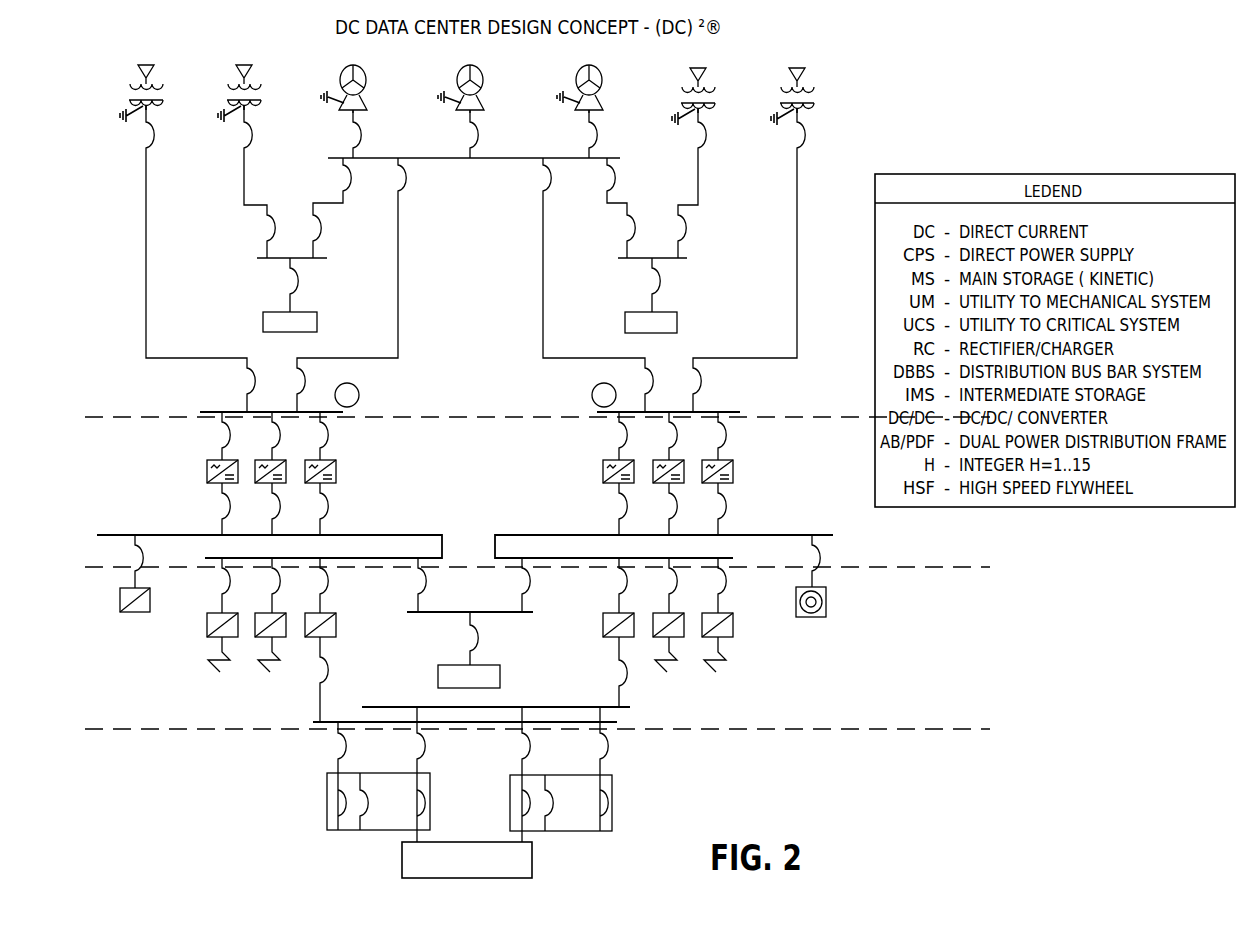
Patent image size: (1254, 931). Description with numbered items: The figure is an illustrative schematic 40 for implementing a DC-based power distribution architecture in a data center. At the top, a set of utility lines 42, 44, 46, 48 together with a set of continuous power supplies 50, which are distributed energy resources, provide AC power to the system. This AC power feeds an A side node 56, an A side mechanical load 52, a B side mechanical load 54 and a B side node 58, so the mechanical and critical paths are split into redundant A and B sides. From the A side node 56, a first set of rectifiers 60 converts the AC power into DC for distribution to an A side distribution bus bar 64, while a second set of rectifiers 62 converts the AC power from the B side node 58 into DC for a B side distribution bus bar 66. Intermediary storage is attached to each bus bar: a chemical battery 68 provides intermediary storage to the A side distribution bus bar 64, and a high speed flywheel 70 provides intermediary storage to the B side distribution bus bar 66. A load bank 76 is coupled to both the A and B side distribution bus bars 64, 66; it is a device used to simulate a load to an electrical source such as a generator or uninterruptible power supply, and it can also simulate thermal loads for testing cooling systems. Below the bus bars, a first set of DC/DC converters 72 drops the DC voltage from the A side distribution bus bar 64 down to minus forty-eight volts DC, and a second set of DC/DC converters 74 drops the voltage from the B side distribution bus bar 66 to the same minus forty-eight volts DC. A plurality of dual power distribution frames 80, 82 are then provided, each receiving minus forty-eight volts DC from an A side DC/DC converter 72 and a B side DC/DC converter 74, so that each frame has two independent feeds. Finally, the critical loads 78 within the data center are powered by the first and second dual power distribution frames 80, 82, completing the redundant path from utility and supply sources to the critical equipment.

The schematic 40 is at (96, 101).
The utility line 42 is at (163, 83).
The utility line 44 is at (816, 93).
The utility line 46 is at (261, 84).
The utility line 48 is at (716, 93).
The continuous power supplies 50 is at (618, 87).
The A side mechanical load 52 is at (330, 322).
The B side mechanical load 54 is at (692, 322).
The A side node 56 is at (207, 408).
The B side node 58 is at (727, 407).
The first set of rectifiers 60 is at (352, 470).
The second set of rectifiers 62 is at (585, 472).
The A side distribution bus bar 64 is at (392, 530).
The B side distribution bus bar 66 is at (547, 530).
The chemical battery 68 is at (138, 617).
The high speed flywheel 70 is at (815, 625).
The first set of DC/DC converters 72 is at (264, 688).
The second set of DC/DC converters 74 is at (674, 688).
The load bank 76 is at (502, 678).
The critical loads 78 is at (533, 857).
The first dual power distribution frame 80 is at (318, 802).
The second dual power distribution frame 82 is at (618, 802).